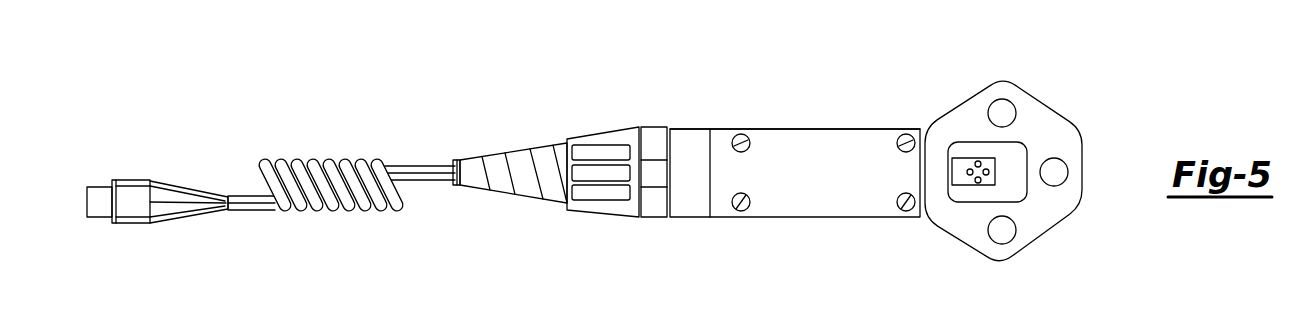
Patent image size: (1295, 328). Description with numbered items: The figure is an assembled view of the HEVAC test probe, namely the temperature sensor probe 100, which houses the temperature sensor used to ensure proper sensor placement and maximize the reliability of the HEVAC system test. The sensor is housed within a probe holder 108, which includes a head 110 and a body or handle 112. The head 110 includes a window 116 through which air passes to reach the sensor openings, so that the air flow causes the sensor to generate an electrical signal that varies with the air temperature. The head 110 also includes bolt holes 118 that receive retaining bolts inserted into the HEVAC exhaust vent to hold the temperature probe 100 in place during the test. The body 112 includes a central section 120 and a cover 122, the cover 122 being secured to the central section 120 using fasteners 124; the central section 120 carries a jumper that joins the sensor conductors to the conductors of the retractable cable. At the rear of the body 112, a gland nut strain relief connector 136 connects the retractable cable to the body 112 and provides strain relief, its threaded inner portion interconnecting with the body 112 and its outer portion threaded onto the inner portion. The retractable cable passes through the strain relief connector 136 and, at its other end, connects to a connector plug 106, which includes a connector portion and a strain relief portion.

The temperature sensor probe 100 is at (462, 120).
The connector plug 106 is at (134, 228).
The probe holder 108 is at (700, 128).
The head 110 is at (925, 228).
The body 112 is at (828, 218).
The window 116 is at (972, 203).
The bolt holes 118 is at (1014, 231).
The central section 120 is at (793, 128).
The cover 122 is at (840, 172).
The fasteners 124 is at (735, 211).
The gland nut strain relief connector 136 is at (490, 245).